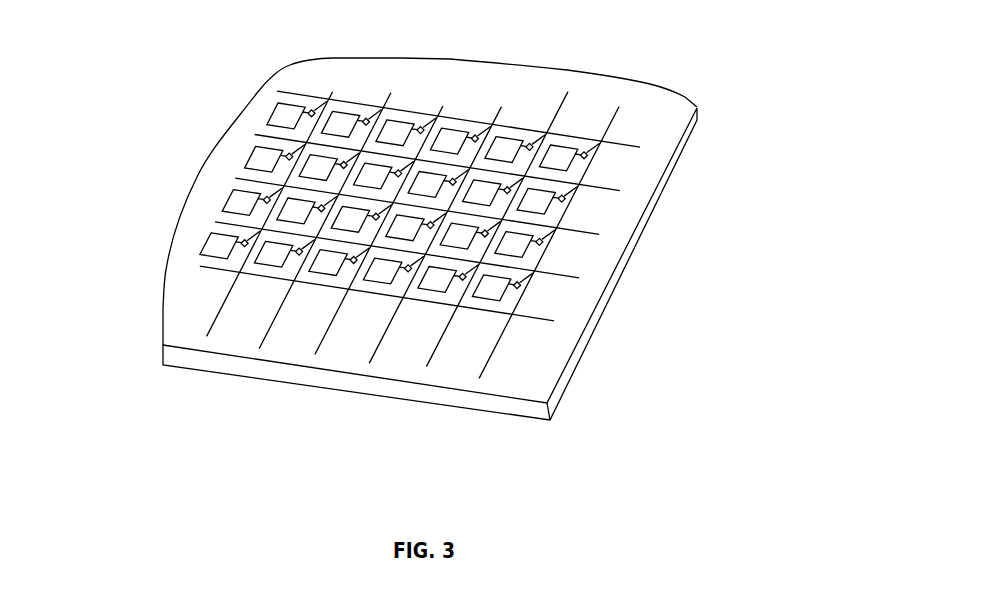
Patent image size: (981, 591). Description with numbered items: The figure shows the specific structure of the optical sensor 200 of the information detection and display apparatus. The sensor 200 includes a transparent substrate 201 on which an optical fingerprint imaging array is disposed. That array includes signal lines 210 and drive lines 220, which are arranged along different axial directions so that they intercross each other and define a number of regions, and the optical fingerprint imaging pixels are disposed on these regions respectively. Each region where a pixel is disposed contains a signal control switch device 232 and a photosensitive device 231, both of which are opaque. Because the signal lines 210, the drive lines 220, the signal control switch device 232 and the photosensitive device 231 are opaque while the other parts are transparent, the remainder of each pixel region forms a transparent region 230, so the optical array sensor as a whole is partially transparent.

The sensor 200 is at (712, 80).
The transparent substrate 201 is at (635, 162).
The signal lines 210 is at (220, 313).
The drive lines 220 is at (367, 288).
The transparent region 230 is at (507, 300).
The photosensitive device 231 is at (490, 293).
The signal control switch device 232 is at (525, 287).